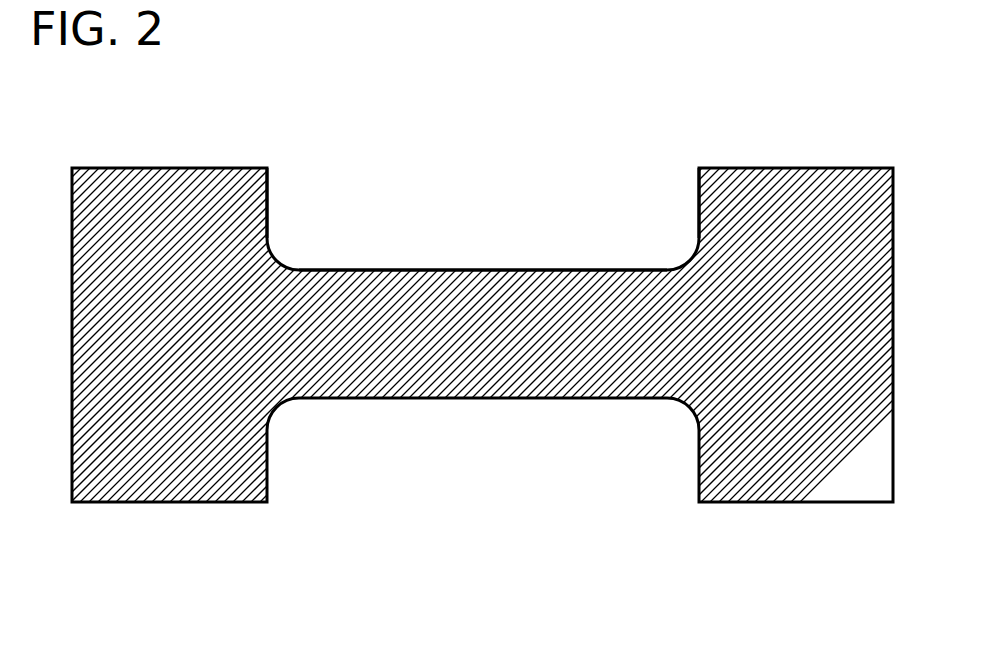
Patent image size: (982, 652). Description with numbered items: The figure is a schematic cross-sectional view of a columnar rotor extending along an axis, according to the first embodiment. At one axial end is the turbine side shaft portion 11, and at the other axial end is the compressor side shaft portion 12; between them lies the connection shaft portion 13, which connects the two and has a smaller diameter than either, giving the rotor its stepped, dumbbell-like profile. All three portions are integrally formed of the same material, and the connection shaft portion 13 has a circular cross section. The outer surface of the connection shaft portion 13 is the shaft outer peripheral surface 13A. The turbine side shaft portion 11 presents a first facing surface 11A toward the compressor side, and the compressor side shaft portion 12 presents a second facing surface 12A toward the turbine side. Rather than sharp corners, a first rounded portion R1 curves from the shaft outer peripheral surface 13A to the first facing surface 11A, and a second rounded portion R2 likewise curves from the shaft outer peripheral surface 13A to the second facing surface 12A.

The turbine side shaft portion 11 is at (178, 502).
The compressor side shaft portion 12 is at (772, 457).
The connection shaft portion 13 is at (445, 370).
The first facing surface 11A is at (268, 205).
The second facing surface 12A is at (699, 198).
The shaft outer peripheral surface 13A is at (450, 270).
The first rounded portion R1 is at (280, 260).
The second rounded portion R2 is at (687, 257).